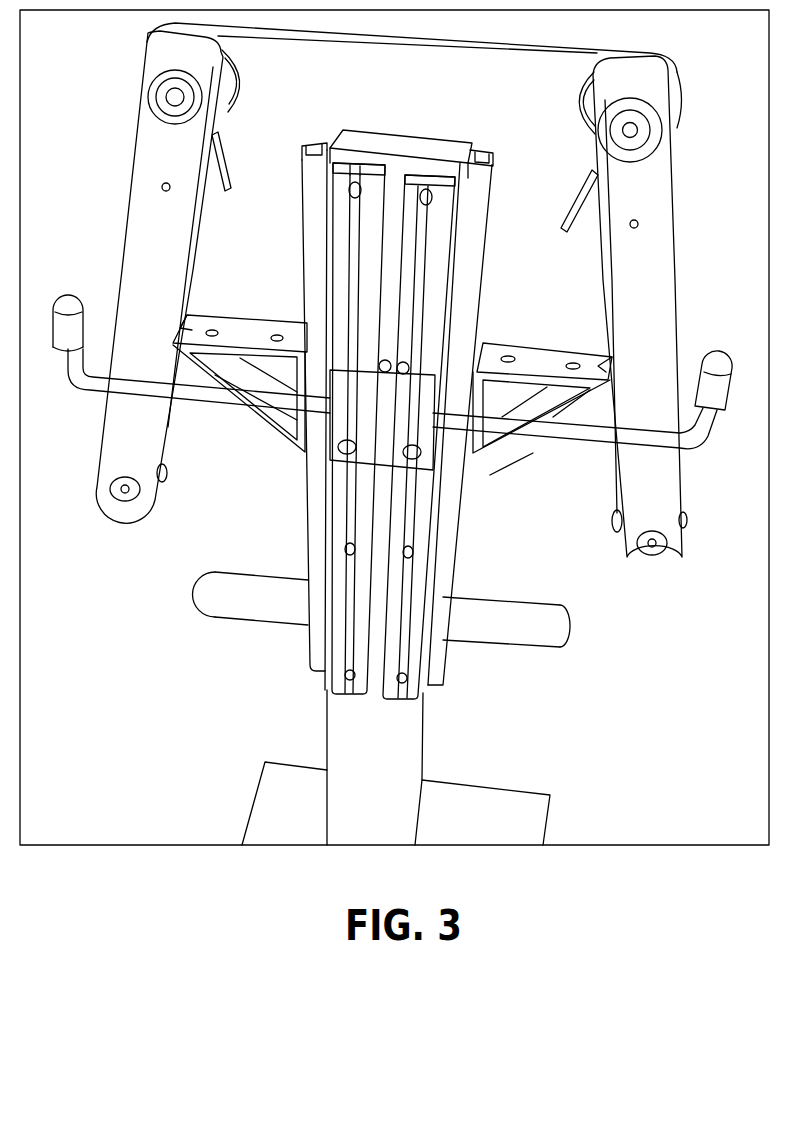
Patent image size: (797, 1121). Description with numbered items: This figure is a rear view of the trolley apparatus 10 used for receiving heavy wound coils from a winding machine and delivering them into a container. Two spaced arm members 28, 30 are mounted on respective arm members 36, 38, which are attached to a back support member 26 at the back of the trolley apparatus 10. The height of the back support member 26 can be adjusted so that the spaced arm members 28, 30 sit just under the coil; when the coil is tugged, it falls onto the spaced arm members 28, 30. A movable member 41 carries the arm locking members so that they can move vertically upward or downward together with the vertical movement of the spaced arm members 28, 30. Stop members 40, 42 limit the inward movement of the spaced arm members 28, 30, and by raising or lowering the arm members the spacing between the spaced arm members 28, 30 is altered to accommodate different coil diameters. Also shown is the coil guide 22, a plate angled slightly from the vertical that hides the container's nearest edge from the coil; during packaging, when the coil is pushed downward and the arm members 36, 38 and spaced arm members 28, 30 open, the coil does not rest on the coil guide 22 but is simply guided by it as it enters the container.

The trolley apparatus 10 is at (693, 269).
The coil guide 22 is at (546, 636).
The back support member 26 is at (547, 266).
The spaced arm member 28 is at (178, 432).
The spaced arm member 30 is at (612, 477).
The arm member 36 is at (128, 282).
The arm member 38 is at (668, 353).
The stop member 40 is at (548, 358).
The movable member 41 is at (412, 422).
The stop member 42 is at (262, 330).